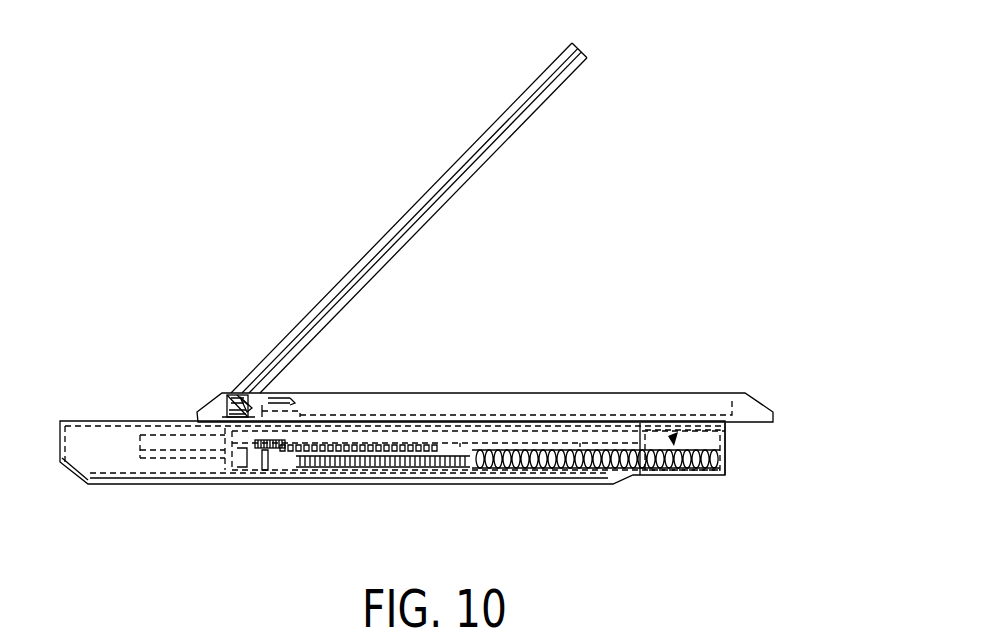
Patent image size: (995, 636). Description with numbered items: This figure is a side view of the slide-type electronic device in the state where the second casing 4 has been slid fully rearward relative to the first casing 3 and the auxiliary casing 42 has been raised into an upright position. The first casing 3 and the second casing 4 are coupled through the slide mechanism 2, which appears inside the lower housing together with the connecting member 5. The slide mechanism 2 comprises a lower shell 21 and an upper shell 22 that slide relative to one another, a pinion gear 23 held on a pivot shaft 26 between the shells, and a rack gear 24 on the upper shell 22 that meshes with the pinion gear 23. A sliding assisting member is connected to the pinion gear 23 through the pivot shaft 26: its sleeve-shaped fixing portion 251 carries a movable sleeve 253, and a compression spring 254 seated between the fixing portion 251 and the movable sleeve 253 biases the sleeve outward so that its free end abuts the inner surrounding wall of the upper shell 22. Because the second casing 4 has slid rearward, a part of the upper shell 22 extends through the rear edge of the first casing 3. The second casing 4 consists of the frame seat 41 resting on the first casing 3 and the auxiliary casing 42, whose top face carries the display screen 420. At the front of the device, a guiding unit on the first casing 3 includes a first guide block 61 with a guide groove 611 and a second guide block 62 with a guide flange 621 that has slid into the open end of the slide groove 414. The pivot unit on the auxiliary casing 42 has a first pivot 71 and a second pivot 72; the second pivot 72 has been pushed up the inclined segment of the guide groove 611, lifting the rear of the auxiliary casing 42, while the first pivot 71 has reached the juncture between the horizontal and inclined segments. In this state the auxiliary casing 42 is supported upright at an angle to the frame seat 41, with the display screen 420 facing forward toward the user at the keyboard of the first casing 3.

The slide mechanism 2 is at (686, 422).
The first casing 3 is at (70, 473).
The second casing 4 is at (526, 233).
The connecting member 5 is at (482, 420).
The lower shell 21 is at (128, 488).
The upper shell 22 is at (730, 452).
The pinion gear 23 is at (290, 488).
The rack gear 24 is at (583, 420).
The pivot shaft 26 is at (344, 488).
The frame seat 41 is at (752, 402).
The auxiliary casing 42 is at (409, 218).
The first guide block 61 is at (225, 414).
The second guide block 62 is at (302, 416).
The first pivot 71 is at (227, 410).
The second pivot 72 is at (257, 390).
The fixing portion 251 is at (243, 488).
The movable sleeve 253 is at (727, 480).
The compression spring 254 is at (386, 488).
The slide groove 414 is at (426, 207).
The display screen 420 is at (318, 302).
The guide groove 611 is at (238, 393).
The guide flange 621 is at (288, 398).